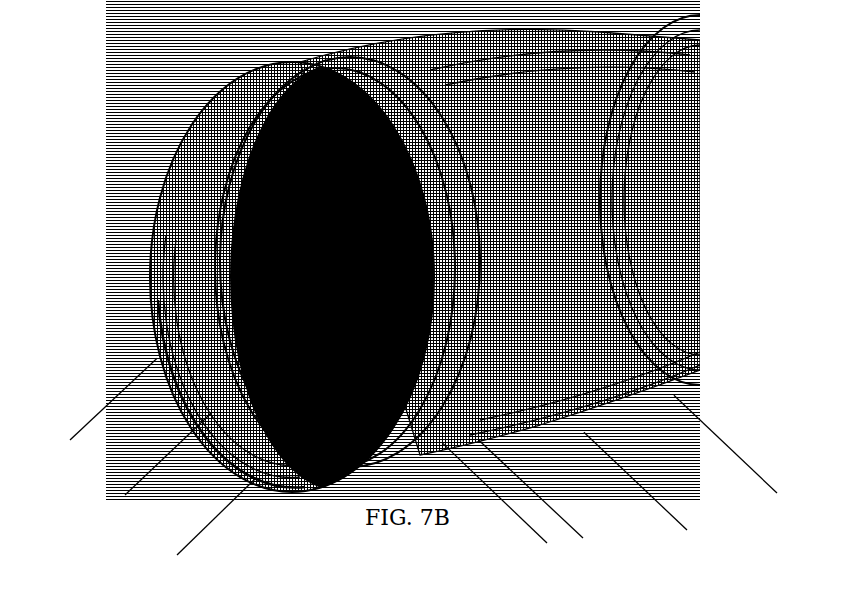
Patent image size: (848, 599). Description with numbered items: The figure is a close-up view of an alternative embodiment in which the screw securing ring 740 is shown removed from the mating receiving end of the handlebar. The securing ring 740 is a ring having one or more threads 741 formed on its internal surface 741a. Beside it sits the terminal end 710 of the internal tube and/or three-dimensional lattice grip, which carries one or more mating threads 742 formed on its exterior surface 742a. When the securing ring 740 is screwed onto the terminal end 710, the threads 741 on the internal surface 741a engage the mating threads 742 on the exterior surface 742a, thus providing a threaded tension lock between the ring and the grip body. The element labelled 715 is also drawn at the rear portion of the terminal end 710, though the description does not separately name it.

The terminal end 710 is at (584, 432).
The rear rim of lens barrel 715 is at (674, 395).
The securing ring 740 is at (157, 358).
The threads 741 is at (257, 477).
The internal surface 741a is at (212, 412).
The mating threads 742 is at (479, 440).
The exterior surface 742a is at (443, 443).